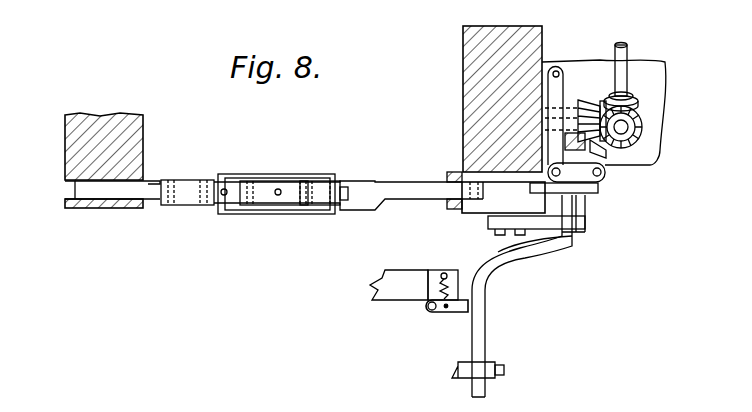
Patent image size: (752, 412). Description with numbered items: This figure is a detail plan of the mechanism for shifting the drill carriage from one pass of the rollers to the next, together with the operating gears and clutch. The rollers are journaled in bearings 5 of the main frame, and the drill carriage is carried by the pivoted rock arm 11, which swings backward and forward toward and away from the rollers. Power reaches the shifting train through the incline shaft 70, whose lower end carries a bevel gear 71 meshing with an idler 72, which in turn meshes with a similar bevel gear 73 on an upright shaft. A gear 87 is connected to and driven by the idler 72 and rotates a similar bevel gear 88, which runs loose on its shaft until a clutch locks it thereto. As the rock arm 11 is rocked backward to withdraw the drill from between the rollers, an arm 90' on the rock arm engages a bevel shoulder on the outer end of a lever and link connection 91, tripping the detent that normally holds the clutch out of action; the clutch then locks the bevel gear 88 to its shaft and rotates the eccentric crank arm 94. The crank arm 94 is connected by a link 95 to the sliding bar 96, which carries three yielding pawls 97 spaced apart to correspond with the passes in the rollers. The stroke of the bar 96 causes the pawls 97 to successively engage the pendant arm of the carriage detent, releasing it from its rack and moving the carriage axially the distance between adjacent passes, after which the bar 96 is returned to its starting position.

The bearings 5 is at (66, 142).
The rock arm 11 is at (385, 292).
The incline shaft 70 is at (628, 53).
The bevel gear 71 is at (642, 109).
The idler 72 is at (598, 142).
The bevel gear 73 is at (637, 134).
The gear 87 is at (592, 101).
The bevel gear 88 is at (587, 150).
The arm 90' is at (465, 339).
The lever and link connection 91 is at (558, 166).
The crank arm 94 is at (565, 229).
The link 95 is at (503, 208).
The sliding bar 96 is at (381, 182).
The yielding pawls 97 is at (198, 190).